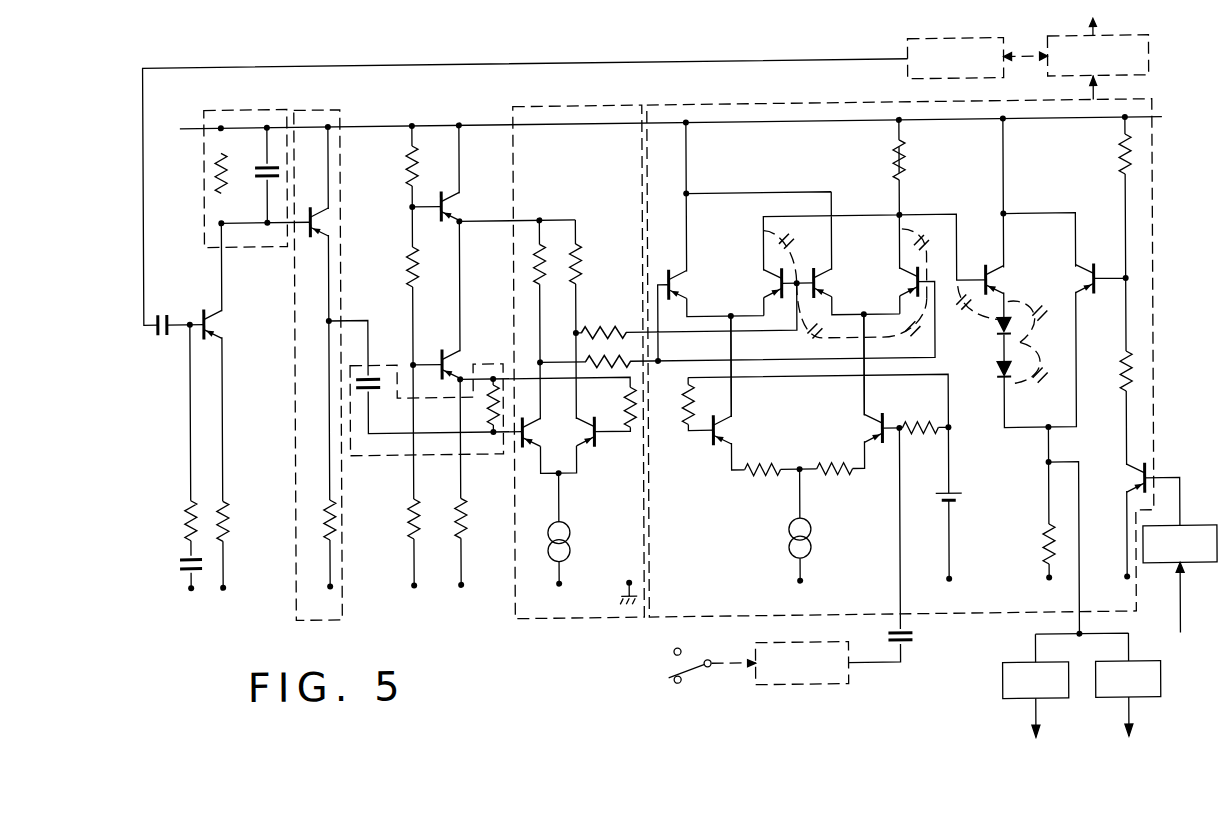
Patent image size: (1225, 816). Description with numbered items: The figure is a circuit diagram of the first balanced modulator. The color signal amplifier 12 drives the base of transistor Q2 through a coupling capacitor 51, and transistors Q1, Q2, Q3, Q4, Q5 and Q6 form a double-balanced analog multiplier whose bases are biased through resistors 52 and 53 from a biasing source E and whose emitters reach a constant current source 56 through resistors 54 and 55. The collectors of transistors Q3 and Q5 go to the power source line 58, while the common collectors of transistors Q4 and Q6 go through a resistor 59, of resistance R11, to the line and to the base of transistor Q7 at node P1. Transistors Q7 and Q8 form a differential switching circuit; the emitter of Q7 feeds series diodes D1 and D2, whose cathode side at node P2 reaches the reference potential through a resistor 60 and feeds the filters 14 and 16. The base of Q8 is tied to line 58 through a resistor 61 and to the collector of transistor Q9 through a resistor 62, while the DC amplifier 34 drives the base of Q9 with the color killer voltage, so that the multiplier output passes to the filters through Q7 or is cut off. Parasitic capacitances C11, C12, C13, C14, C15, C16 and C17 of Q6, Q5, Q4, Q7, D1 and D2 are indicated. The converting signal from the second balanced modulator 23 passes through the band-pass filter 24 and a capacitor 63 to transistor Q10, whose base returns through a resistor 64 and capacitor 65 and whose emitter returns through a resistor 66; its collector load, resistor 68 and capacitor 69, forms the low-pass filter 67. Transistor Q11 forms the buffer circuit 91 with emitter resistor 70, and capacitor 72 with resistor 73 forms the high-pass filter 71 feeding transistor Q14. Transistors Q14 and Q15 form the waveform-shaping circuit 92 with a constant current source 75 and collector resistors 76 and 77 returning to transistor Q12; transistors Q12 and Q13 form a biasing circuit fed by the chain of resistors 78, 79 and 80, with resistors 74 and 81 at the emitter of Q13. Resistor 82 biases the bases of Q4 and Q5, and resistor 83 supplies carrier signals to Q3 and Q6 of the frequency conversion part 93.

The power source line 58 is at (753, 123).
The buffer circuit 91 is at (320, 106).
The waveform-shaping circuit 92 is at (528, 105).
The frequency conversion part 93 is at (651, 105).
The low-pass filter 67 is at (203, 205).
The resistor 68 is at (211, 166).
The capacitor 69 is at (260, 180).
The capacitor 63 is at (162, 331).
The resistor 64 is at (184, 521).
The capacitor 65 is at (180, 556).
The resistor 66 is at (229, 532).
The resistor 70 is at (337, 532).
The high-pass filter 71 is at (362, 455).
The capacitor 72 is at (376, 392).
The resistor 73 is at (486, 414).
The resistor 74 is at (624, 397).
The constant current source 75 is at (573, 546).
The resistor 76 is at (533, 254).
The resistor 77 is at (582, 260).
The resistor 78 is at (404, 168).
The resistor 79 is at (405, 254).
The resistor 80 is at (420, 520).
The resistor 81 is at (466, 520).
The resistor 82 is at (604, 328).
The resistor 83 is at (589, 358).
The resistor 52 is at (682, 410).
The resistor 53 is at (919, 426).
The resistor 54 is at (758, 478).
The resistor 55 is at (839, 478).
The constant current source 56 is at (810, 545).
The resistor 59 is at (906, 160).
The resistor 60 is at (1042, 548).
The resistor 61 is at (1119, 159).
The resistor 62 is at (1120, 376).
The coupling capacitor 51 is at (913, 641).
The color signal amplifier 12 is at (847, 685).
The filter 14 is at (1001, 692).
The filter 16 is at (1159, 693).
The second balanced modulator 23 is at (1048, 80).
The band-pass filter 24 is at (906, 80).
The DC amplifier 34 is at (1174, 570).
The transistor Q1 is at (732, 442).
The transistor Q2 is at (862, 441).
The transistor Q3 is at (688, 283).
The transistor Q4 is at (764, 290).
The transistor Q5 is at (832, 284).
The transistor Q6 is at (900, 290).
The transistor Q7 is at (1007, 273).
The transistor Q8 is at (1085, 289).
The transistor Q9 is at (1137, 488).
The transistor Q10 is at (223, 313).
The transistor Q11 is at (311, 198).
The transistor Q12 is at (460, 212).
The transistor Q13 is at (458, 366).
The transistor Q14 is at (531, 436).
The transistor Q15 is at (587, 458).
The collector-base capacitance C11 is at (928, 258).
The base-emitter capacitance C12 is at (905, 331).
The base-emitter capacitance C13 is at (828, 319).
The base-collector capacitance C14 is at (796, 251).
The base-emitter capacitance C15 is at (970, 312).
The capacitance C16 is at (1042, 321).
The capacitance C17 is at (1039, 376).
The diode D1 is at (1000, 340).
The diode D2 is at (1000, 373).
The resistance R11 is at (893, 171).
The node P1 is at (904, 217).
The node P2 is at (1046, 465).
The battery E is at (962, 502).